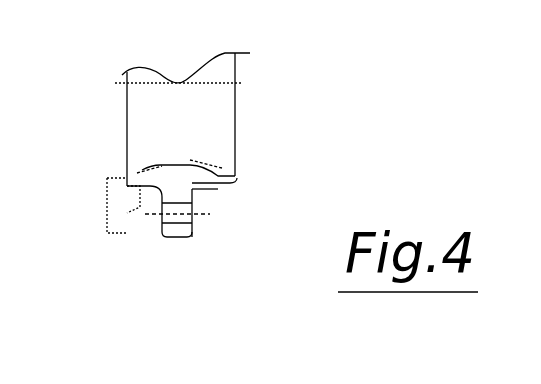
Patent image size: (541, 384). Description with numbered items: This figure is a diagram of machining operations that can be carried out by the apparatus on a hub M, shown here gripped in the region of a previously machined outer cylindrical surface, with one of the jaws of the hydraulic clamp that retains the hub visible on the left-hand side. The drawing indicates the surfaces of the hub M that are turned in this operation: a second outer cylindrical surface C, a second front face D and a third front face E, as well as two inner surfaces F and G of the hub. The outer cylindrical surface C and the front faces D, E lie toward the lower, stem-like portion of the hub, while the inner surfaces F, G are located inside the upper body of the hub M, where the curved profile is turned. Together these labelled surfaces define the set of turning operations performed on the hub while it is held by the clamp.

The hub M is at (253, 103).
The inner surface G is at (200, 163).
The inner surface F is at (153, 162).
The third front face E is at (240, 179).
The second outer cylindrical surface C is at (215, 189).
The second front face D is at (193, 216).